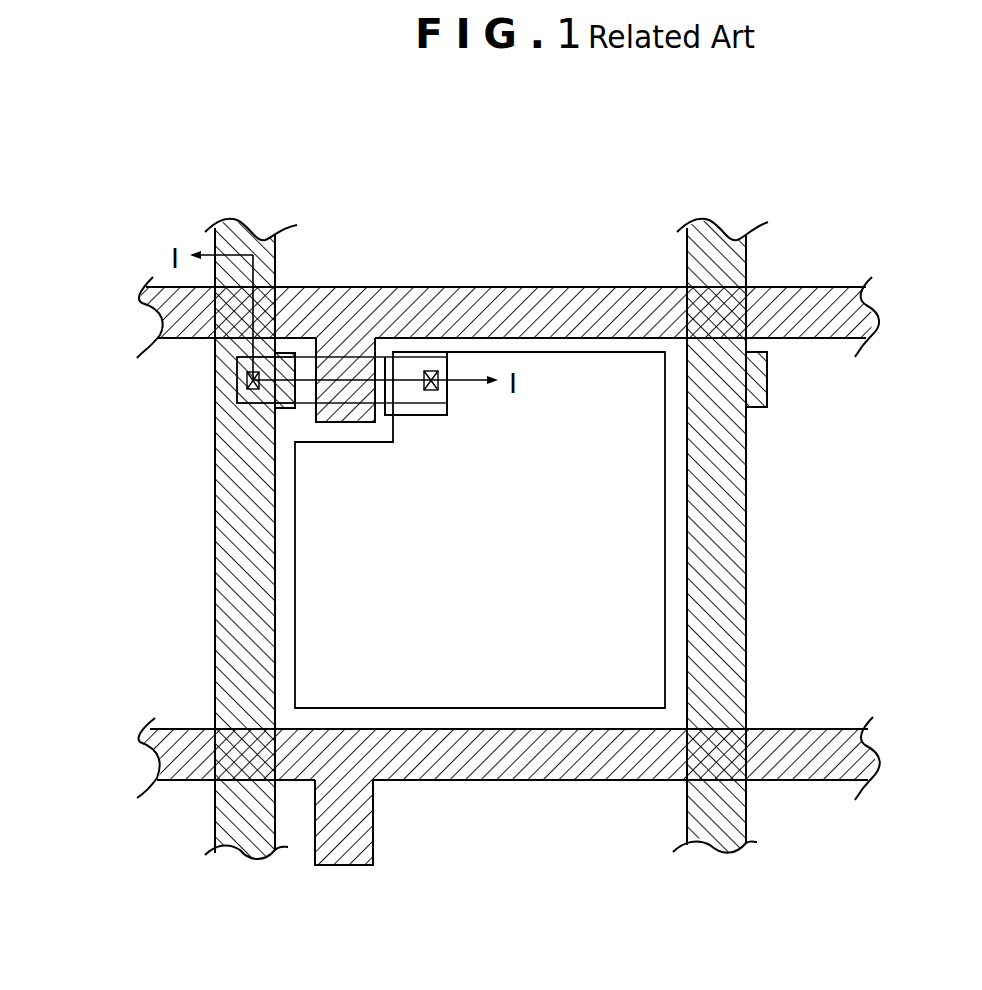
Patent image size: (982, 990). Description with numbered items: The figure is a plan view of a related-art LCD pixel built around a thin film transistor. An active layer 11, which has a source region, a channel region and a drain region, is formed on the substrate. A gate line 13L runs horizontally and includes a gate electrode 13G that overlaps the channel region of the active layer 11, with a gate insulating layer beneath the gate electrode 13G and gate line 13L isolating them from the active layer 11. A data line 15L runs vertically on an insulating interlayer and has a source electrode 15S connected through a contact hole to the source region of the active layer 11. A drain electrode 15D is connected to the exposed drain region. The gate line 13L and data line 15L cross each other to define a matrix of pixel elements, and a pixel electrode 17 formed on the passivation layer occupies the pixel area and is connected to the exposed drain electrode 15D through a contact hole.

The active layer 11 is at (447, 392).
The gate line 13L is at (167, 311).
The gate electrode 13G is at (360, 422).
The data line 15L is at (277, 237).
The source electrode 15S is at (294, 412).
The drain electrode 15D is at (430, 414).
The pixel electrode 17 is at (665, 607).